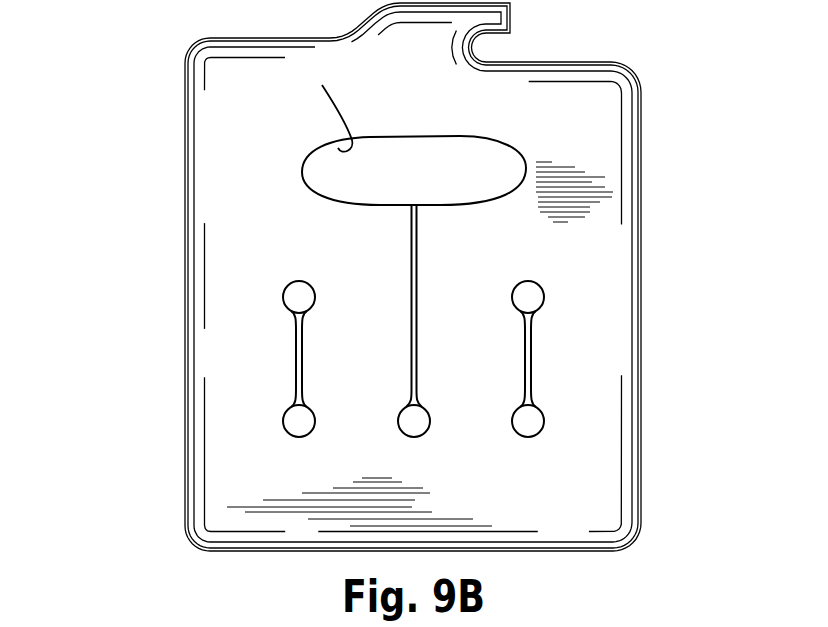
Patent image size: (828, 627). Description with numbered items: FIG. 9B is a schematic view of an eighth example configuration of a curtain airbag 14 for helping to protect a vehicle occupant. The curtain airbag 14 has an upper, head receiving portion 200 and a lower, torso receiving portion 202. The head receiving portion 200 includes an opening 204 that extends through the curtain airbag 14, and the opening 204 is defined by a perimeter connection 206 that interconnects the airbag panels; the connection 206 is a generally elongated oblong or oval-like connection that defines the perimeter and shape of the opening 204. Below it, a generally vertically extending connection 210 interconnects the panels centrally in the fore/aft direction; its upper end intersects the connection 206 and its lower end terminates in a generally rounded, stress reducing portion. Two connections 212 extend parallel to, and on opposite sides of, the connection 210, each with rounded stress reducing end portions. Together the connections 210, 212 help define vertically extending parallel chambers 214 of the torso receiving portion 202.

The curtain airbag 14 is at (127, 86).
The head receiving portion 200 is at (507, 91).
The torso receiving portion 202 is at (346, 460).
The opening 204 is at (410, 167).
The perimeter connection 206 is at (324, 105).
The vertically extending connection 210 is at (410, 273).
The connections 212 is at (296, 345).
The parallel chambers 214 is at (253, 377).